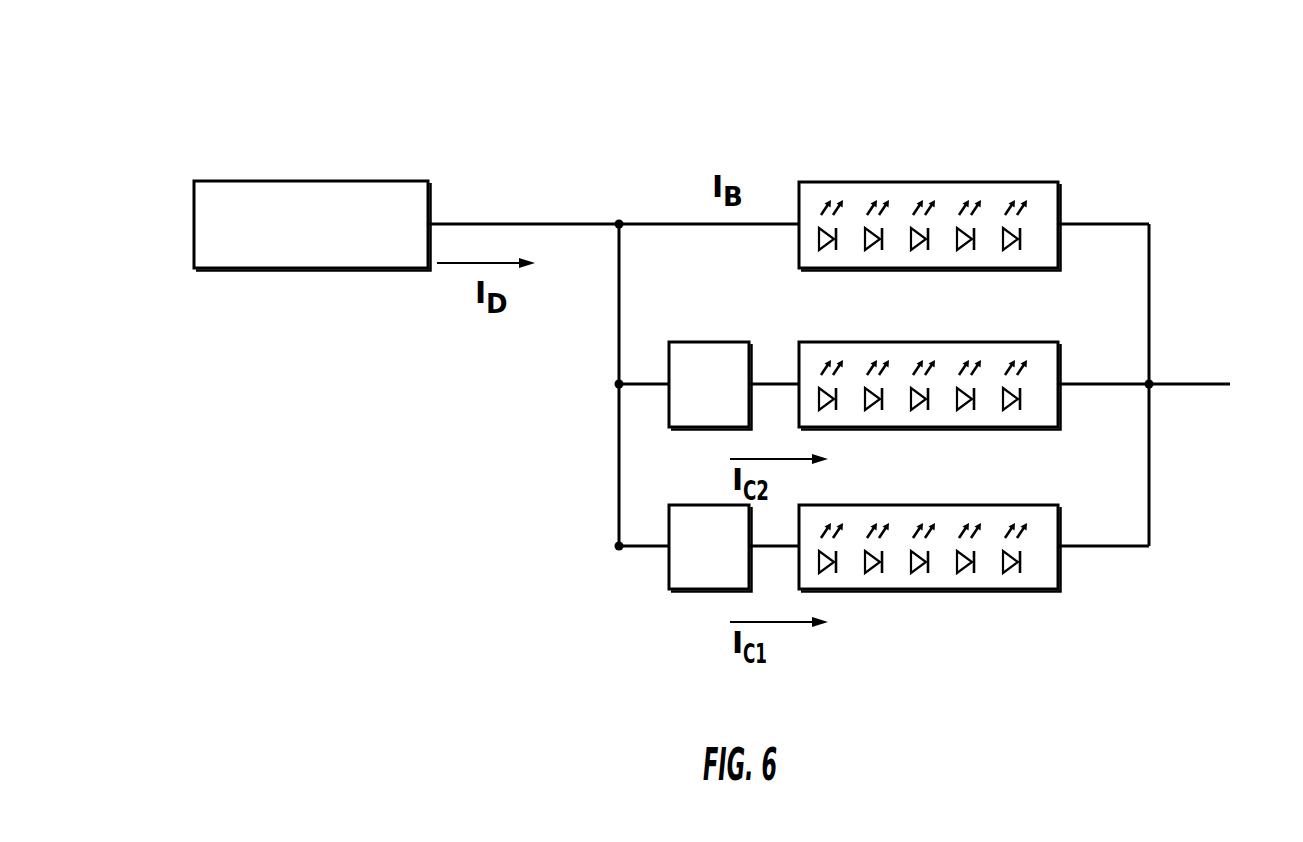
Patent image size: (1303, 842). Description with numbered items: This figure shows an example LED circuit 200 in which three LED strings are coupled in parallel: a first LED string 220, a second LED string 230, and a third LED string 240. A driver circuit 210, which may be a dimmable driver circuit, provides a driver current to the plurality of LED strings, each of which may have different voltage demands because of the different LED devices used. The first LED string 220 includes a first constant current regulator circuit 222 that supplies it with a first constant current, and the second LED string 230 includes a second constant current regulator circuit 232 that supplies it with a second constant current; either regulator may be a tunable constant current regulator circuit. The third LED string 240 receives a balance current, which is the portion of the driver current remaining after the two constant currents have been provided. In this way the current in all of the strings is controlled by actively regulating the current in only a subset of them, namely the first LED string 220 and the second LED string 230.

The LED circuit 200 is at (1156, 112).
The driver circuit 210 is at (354, 181).
The first LED string 220 is at (921, 591).
The first constant current regulator circuit 222 is at (700, 591).
The second LED string 230 is at (1033, 342).
The second constant current regulator circuit 232 is at (700, 342).
The third LED string 240 is at (962, 182).